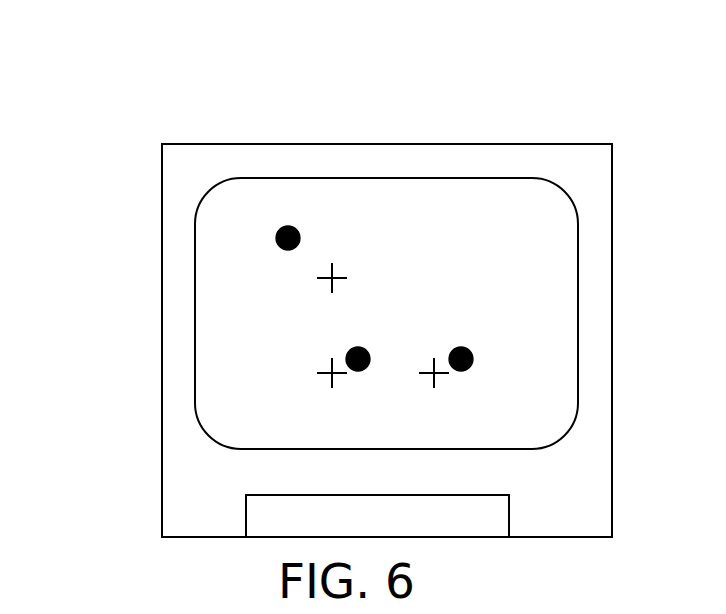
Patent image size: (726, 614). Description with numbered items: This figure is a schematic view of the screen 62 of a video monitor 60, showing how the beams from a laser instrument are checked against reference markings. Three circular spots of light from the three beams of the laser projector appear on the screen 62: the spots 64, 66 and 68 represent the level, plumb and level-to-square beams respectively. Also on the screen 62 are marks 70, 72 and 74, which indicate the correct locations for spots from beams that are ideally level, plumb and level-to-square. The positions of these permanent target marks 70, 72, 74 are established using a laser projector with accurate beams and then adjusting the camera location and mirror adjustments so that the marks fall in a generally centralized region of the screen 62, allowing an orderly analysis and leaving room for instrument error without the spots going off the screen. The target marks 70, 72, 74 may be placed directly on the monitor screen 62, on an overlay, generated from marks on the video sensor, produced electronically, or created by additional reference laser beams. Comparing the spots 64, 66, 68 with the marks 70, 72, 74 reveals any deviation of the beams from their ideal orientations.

The video monitor 60 is at (228, 58).
The screen 62 is at (228, 180).
The level beam spot 64 is at (288, 226).
The plumb beam spot 66 is at (358, 347).
The level-to-square beam spot 68 is at (465, 348).
The level target mark 70 is at (323, 280).
The plumb target mark 72 is at (325, 375).
The level-to-square target mark 74 is at (432, 374).